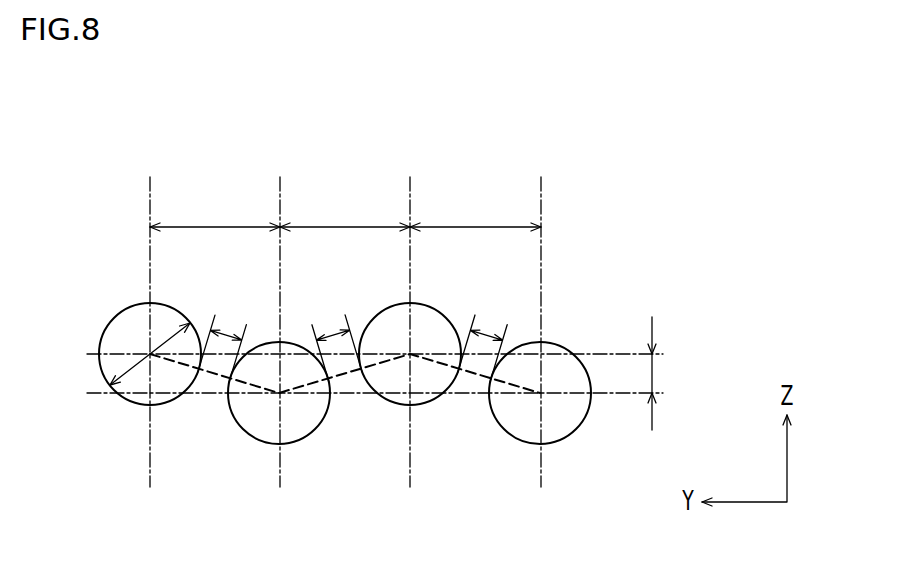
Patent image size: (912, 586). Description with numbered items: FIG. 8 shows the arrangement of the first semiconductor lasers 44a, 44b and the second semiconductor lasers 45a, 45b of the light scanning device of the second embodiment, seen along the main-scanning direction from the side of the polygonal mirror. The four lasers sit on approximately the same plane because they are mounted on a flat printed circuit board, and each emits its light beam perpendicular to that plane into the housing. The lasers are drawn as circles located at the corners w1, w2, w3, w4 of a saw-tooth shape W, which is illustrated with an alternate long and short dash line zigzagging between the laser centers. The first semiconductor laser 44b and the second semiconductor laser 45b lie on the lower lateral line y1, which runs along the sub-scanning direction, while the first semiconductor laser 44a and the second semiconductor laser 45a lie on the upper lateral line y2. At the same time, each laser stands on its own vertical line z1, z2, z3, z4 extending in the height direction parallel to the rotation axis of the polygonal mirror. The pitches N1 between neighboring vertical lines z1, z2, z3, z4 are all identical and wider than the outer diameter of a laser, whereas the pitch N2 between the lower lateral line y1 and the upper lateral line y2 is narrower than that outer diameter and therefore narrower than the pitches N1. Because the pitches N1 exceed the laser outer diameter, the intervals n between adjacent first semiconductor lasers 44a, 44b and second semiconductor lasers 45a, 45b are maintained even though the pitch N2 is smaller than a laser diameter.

The second semiconductor laser 45a is at (129, 401).
The second semiconductor laser 45b is at (256, 438).
The first semiconductor laser 44a is at (389, 401).
The first semiconductor laser 44b is at (516, 438).
The corner of saw-tooth shape w1 is at (408, 352).
The corner of saw-tooth shape w2 is at (542, 392).
The corner of saw-tooth shape w3 is at (143, 350).
The corner of saw-tooth shape w4 is at (276, 390).
The saw-tooth shape W is at (435, 356).
The interval n is at (231, 334).
The pitch N1 is at (218, 227).
The pitch N2 is at (655, 375).
The vertical line z1 is at (542, 188).
The vertical line z2 is at (411, 188).
The vertical line z3 is at (281, 188).
The vertical line z4 is at (151, 188).
The lower lateral line y1 is at (617, 395).
The upper lateral line y2 is at (617, 353).